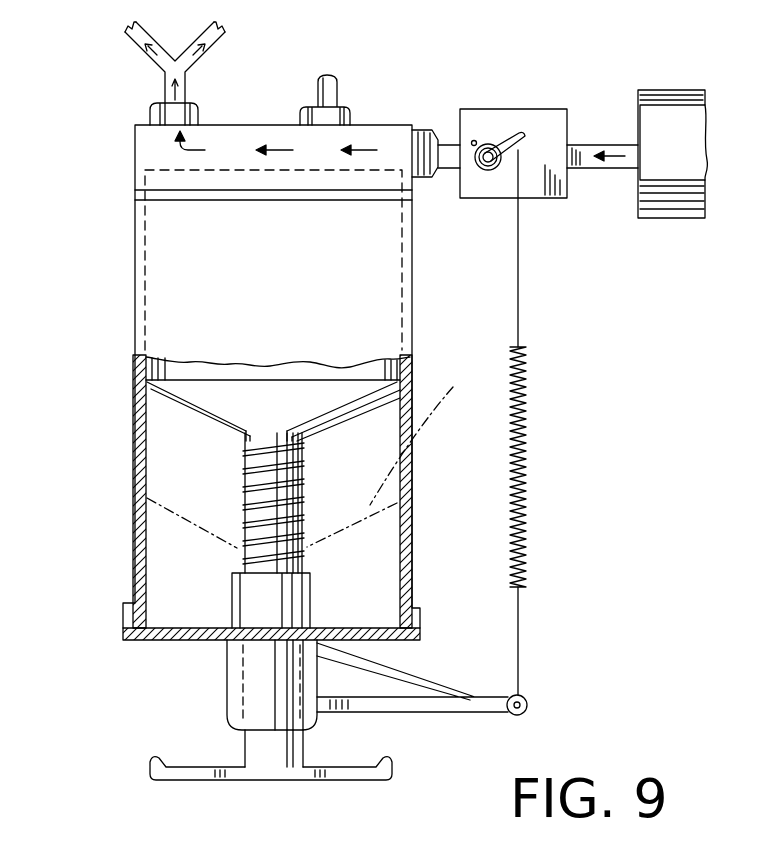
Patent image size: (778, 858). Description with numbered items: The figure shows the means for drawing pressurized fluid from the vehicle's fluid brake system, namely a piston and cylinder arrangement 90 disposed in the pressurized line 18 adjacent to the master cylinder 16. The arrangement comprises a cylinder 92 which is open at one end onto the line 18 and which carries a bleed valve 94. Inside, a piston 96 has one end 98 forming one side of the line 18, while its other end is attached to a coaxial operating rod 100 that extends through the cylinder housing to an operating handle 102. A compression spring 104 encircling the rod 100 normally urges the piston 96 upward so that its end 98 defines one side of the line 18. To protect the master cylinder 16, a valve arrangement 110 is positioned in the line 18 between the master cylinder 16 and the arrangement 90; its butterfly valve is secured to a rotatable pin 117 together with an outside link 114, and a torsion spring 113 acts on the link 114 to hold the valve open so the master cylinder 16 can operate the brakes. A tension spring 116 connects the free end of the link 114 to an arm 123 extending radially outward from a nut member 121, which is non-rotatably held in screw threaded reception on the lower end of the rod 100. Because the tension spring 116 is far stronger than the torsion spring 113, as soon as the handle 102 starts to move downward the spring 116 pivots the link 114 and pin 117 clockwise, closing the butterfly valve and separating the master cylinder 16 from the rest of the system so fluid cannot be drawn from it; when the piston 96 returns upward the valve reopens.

The master cylinder 16 is at (668, 90).
The pressurized line 18 is at (138, 50).
The piston and cylinder arrangement 90 is at (129, 289).
The cylinder 92 is at (130, 515).
The bleed valve 94 is at (316, 92).
The piston 96 is at (368, 370).
The one end of the piston 98 is at (232, 168).
The operating rod 100 is at (303, 525).
The operating handle 102 is at (183, 770).
The compression spring 104 is at (265, 478).
The valve arrangement 110 is at (503, 90).
The torsion spring 113 is at (487, 140).
The outside link 114 is at (521, 142).
The tension spring 116 is at (525, 395).
The rotatable pin 117 is at (489, 170).
The nut member 121 is at (232, 660).
The arm 123 is at (478, 703).